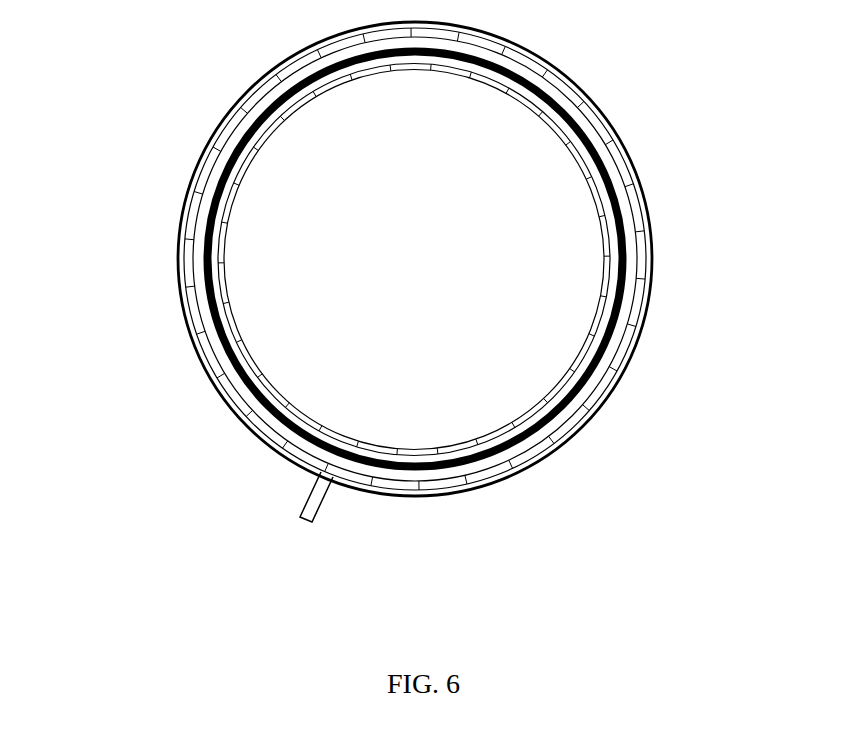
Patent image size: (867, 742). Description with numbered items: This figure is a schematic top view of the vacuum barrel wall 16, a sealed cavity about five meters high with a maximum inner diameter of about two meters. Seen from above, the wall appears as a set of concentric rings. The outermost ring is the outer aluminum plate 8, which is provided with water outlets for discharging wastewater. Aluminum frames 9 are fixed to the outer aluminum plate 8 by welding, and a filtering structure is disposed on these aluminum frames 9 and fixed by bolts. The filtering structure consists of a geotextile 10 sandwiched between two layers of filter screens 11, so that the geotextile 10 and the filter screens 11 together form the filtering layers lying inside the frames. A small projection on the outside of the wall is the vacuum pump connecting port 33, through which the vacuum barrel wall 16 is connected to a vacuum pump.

The outer aluminum plate 8 is at (180, 240).
The aluminum frame 9 is at (290, 82).
The geotextile 10 is at (190, 318).
The filter screen 11 is at (258, 412).
The vacuum barrel wall 16 is at (637, 175).
The vacuum pump connecting port 33 is at (320, 512).